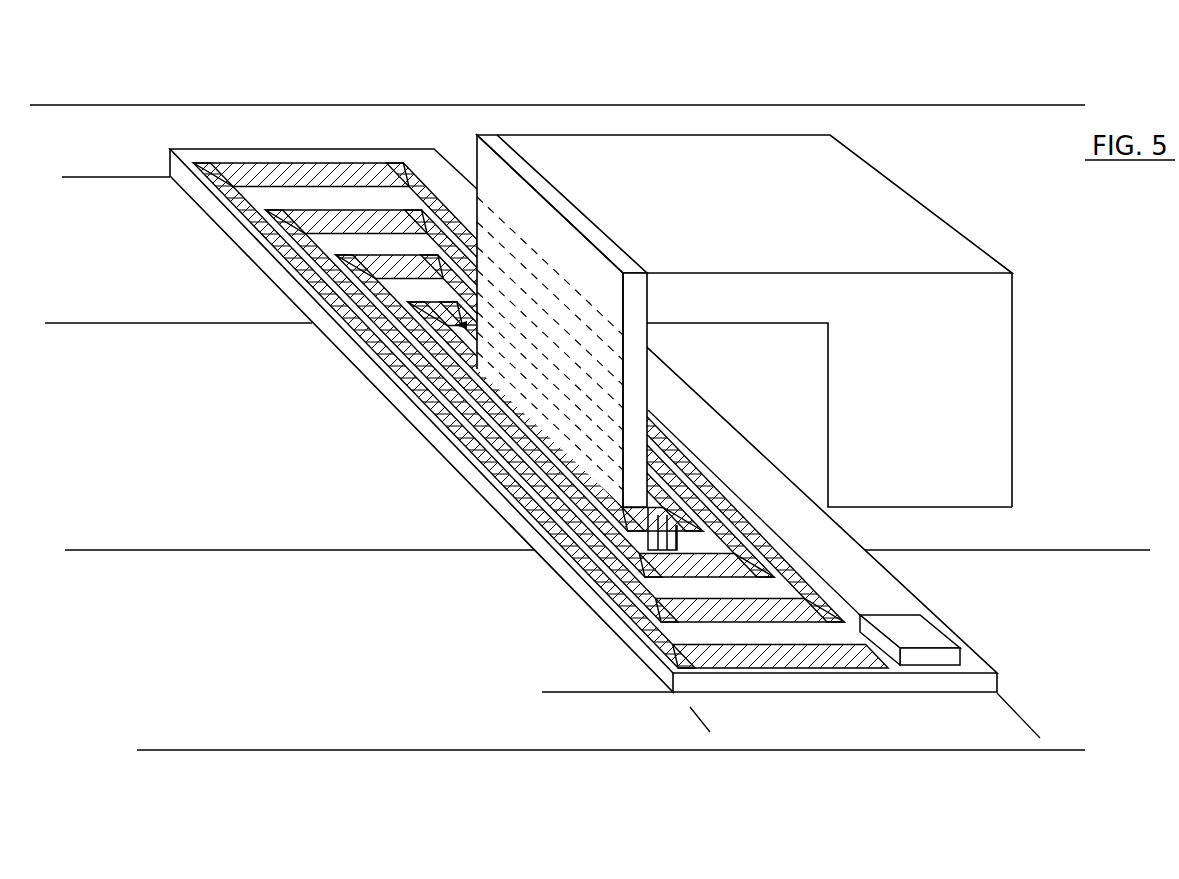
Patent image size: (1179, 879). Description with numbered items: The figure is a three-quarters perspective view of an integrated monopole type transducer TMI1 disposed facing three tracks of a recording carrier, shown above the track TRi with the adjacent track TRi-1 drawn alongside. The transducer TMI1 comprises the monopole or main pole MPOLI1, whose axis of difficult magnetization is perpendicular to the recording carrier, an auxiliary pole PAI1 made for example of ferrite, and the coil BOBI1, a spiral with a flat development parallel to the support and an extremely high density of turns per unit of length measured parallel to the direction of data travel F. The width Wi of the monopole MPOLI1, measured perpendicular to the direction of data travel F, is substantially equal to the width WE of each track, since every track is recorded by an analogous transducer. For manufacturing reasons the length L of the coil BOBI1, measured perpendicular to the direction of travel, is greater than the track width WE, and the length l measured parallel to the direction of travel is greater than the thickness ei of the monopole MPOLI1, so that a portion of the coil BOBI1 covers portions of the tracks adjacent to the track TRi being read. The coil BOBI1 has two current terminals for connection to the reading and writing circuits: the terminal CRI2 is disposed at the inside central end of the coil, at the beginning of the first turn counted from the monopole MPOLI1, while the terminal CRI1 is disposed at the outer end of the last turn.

The adjacent track TRi-1 is at (48, 130).
The track TRi is at (607, 530).
The coil BOBI1 is at (643, 655).
The monopole or main pole MPOLI1 is at (607, 246).
The transducer TMI1 is at (845, 197).
The auxiliary pole PAI1 is at (829, 415).
The terminal CRI1 is at (922, 638).
The terminal CRI2 is at (690, 512).
The length of the coil L is at (567, 692).
The length of the coil l is at (1030, 723).
The width of the track WE is at (478, 549).
The width of the monopole Wi is at (618, 300).
The thickness of the monopole ei is at (660, 377).
The direction of data travel F is at (880, 774).